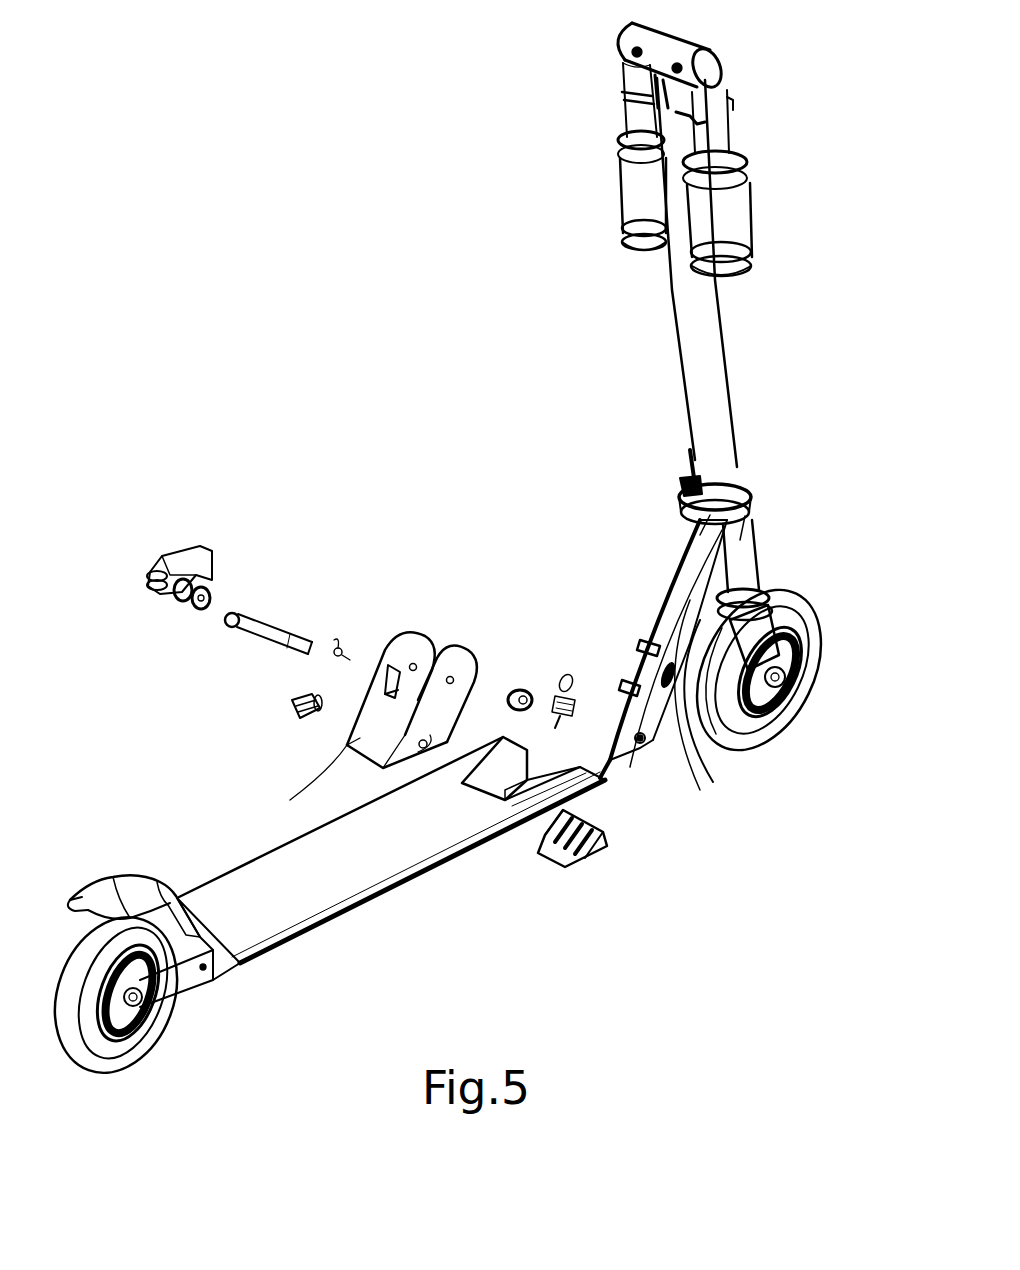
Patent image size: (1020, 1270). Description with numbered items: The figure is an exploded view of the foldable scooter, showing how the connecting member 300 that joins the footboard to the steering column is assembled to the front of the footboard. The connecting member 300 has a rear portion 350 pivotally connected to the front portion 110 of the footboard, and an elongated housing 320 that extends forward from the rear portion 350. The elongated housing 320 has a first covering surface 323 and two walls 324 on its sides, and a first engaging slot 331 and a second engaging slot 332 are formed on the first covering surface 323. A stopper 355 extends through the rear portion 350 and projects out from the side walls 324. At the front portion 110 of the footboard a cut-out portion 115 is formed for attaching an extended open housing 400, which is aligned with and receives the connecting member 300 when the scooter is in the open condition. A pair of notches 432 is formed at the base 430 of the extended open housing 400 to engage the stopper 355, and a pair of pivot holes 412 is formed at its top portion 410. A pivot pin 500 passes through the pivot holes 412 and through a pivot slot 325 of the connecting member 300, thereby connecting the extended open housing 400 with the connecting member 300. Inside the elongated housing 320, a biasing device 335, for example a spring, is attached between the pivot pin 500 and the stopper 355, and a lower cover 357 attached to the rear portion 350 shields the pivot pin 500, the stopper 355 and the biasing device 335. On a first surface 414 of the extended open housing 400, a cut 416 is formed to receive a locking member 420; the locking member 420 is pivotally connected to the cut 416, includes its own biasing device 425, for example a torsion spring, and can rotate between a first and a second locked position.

The front portion of the footboard 110 is at (543, 793).
The cut-out portion 115 is at (520, 788).
The connecting member 300 is at (688, 638).
The elongated housing 320 is at (688, 545).
The first covering surface 323 is at (668, 604).
The walls 324 is at (723, 570).
The pivot slot 325 is at (672, 700).
The first engaging slot 331 is at (617, 667).
The second engaging slot 332 is at (638, 636).
The biasing device 335 is at (557, 690).
The rear portion of the connecting member 350 is at (632, 752).
The stopper 355 is at (646, 744).
The lower cover 357 is at (583, 868).
The extended open housing 400 is at (418, 712).
The top portion of the extended open housing 410 is at (407, 632).
The pivot holes 412 is at (450, 680).
The first surface of the extended open housing 414 is at (378, 720).
The cut 416 is at (390, 697).
The locking member 420 is at (287, 715).
The biasing device 425 is at (330, 632).
The base of the extended open housing 430 is at (353, 748).
The notches 432 is at (418, 752).
The pivot pin 500 is at (275, 630).